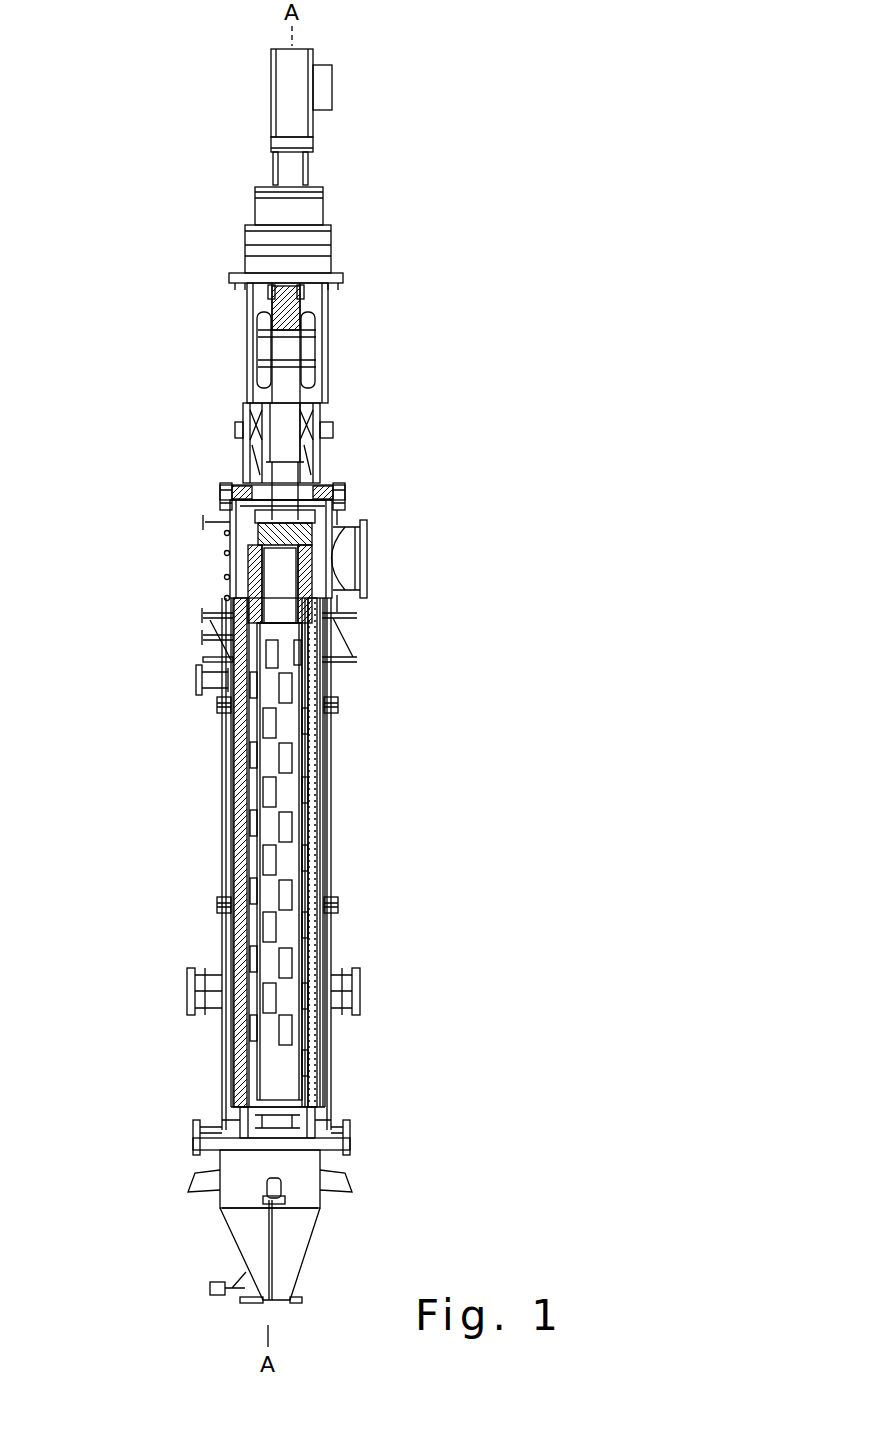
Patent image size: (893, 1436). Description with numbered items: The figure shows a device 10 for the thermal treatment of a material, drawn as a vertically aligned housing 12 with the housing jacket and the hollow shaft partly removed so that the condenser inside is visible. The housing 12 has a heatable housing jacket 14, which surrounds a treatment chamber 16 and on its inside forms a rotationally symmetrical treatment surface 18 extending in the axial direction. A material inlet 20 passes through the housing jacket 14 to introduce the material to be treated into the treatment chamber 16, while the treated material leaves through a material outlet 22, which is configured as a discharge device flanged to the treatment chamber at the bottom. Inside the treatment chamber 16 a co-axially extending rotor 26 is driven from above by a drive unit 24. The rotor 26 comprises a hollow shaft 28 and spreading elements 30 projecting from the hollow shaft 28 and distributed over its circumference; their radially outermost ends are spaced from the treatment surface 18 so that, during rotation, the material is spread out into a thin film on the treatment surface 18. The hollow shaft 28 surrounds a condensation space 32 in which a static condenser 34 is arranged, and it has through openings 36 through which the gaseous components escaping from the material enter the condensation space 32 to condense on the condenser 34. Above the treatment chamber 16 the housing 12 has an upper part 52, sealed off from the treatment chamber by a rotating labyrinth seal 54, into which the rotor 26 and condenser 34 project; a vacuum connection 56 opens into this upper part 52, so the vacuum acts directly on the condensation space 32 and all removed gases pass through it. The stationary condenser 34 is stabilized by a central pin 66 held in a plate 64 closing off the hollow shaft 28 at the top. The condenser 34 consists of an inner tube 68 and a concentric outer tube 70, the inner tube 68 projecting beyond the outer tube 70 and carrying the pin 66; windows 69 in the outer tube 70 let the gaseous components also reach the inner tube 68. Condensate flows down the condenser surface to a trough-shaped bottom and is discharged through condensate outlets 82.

The device 10 is at (464, 236).
The drive unit 24 is at (298, 130).
The plate 64 is at (346, 505).
The pin 66 is at (346, 486).
The vacuum connection 56 is at (337, 560).
The rotor 26 is at (246, 540).
The hollow shaft 28 is at (253, 562).
The inner tube 68 is at (278, 612).
The upper part 52 is at (329, 605).
The rotating labyrinth seal 54 is at (306, 692).
The condensation space 32 is at (414, 642).
The material inlet 20 is at (215, 673).
The housing 12 is at (333, 755).
The condenser 34 is at (272, 748).
The spreading elements 30 is at (231, 770).
The treatment surface 18 is at (235, 790).
The treatment chamber 16 is at (326, 800).
The housing jacket 14 is at (328, 836).
The through openings 36 is at (303, 895).
The outer tube 70 is at (272, 828).
The windows 69 is at (290, 960).
The condensate outlets 82 is at (345, 1145).
The material outlet 22 is at (296, 1182).